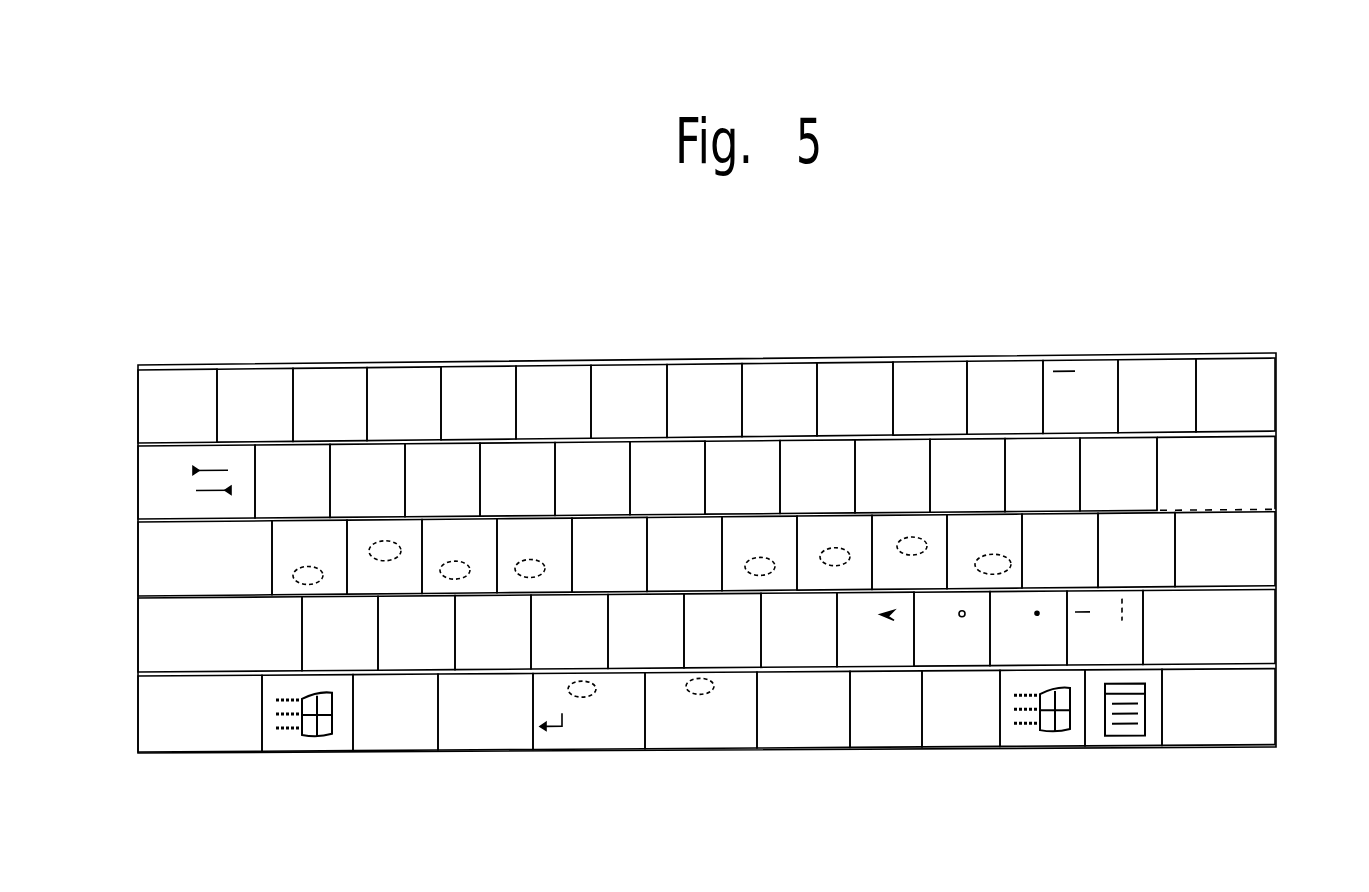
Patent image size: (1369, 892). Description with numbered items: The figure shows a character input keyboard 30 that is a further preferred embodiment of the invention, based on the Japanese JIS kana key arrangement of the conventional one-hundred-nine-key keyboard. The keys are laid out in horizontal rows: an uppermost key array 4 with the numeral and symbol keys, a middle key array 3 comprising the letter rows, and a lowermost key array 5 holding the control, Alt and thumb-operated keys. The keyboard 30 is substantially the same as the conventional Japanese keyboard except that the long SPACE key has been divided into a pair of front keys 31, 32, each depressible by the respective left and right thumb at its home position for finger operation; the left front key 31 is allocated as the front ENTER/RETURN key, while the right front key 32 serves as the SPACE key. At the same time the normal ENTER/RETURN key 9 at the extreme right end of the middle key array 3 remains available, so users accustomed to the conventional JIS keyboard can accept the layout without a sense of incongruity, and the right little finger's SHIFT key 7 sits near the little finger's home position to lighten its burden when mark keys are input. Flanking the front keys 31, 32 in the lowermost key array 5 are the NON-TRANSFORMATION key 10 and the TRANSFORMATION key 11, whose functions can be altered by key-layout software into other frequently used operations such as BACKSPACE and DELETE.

The character input keyboard 30 is at (654, 334).
The uppermost key array 4 is at (123, 452).
The middle key array 3 is at (123, 675).
The lowermost key array 5 is at (123, 683).
The ENTER/RETURN key 9 is at (1252, 494).
The right little finger's SHIFT key 7 is at (1253, 601).
The NON-TRANSFORMATION key 10 is at (495, 735).
The left front key 31 is at (640, 742).
The right front key 32 is at (737, 737).
The TRANSFORMATION key 11 is at (774, 733).